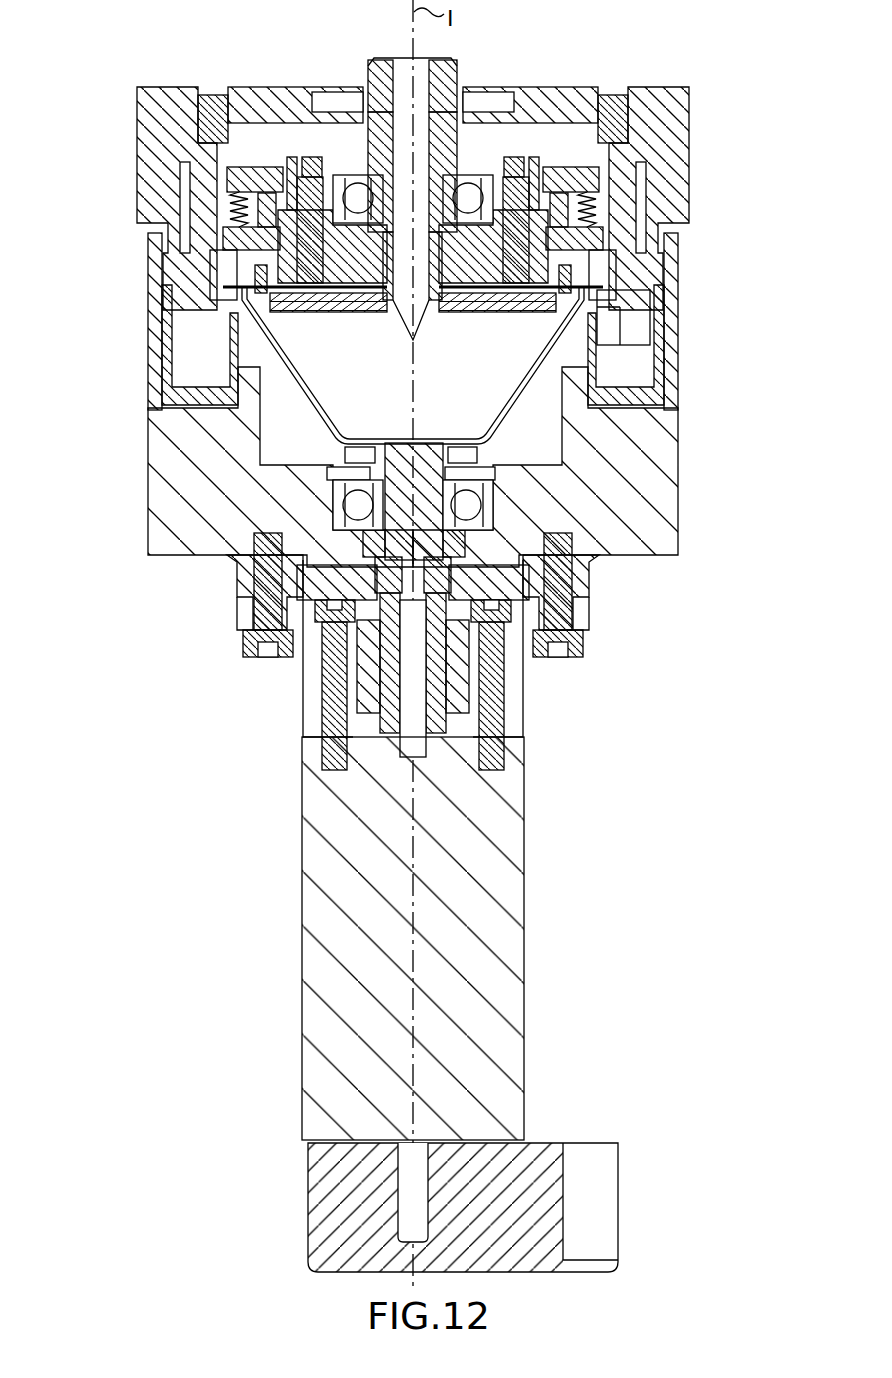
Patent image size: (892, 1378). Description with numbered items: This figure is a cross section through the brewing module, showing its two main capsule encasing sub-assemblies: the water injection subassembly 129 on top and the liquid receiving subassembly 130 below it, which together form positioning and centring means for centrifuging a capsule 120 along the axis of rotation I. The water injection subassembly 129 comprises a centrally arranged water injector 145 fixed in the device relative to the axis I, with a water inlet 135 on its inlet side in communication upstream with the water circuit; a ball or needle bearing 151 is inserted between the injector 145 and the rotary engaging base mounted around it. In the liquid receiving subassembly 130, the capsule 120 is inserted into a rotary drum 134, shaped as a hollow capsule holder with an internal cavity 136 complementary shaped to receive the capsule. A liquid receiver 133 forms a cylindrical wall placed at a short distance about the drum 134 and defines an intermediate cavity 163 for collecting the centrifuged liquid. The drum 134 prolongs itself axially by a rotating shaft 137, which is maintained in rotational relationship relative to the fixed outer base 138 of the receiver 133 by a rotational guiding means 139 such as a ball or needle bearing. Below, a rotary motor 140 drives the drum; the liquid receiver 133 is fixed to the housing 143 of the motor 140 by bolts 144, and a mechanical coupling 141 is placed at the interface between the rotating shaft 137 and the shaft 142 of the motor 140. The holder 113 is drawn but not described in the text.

The water inlet 135 is at (397, 58).
The water injector 145 is at (459, 74).
The ball or needle bearing 151 is at (470, 180).
The water injection subassembly 129 is at (126, 89).
The liquid receiver 133 is at (160, 350).
The intermediate cavity 163 is at (633, 365).
The holder 113 is at (612, 327).
The internal cavity 136 is at (293, 375).
The rotating shaft 137 is at (425, 452).
The rotary drum 134 is at (265, 428).
The capsule 120 is at (580, 423).
The rotational guiding means 139 is at (485, 502).
The outer base 138 is at (667, 542).
The liquid receiving subassembly 130 is at (737, 232).
The mechanical coupling 141 is at (367, 654).
The bolts 144 is at (582, 644).
The housing 143 is at (520, 680).
The shaft 142 is at (465, 748).
The rotary motor 140 is at (525, 845).